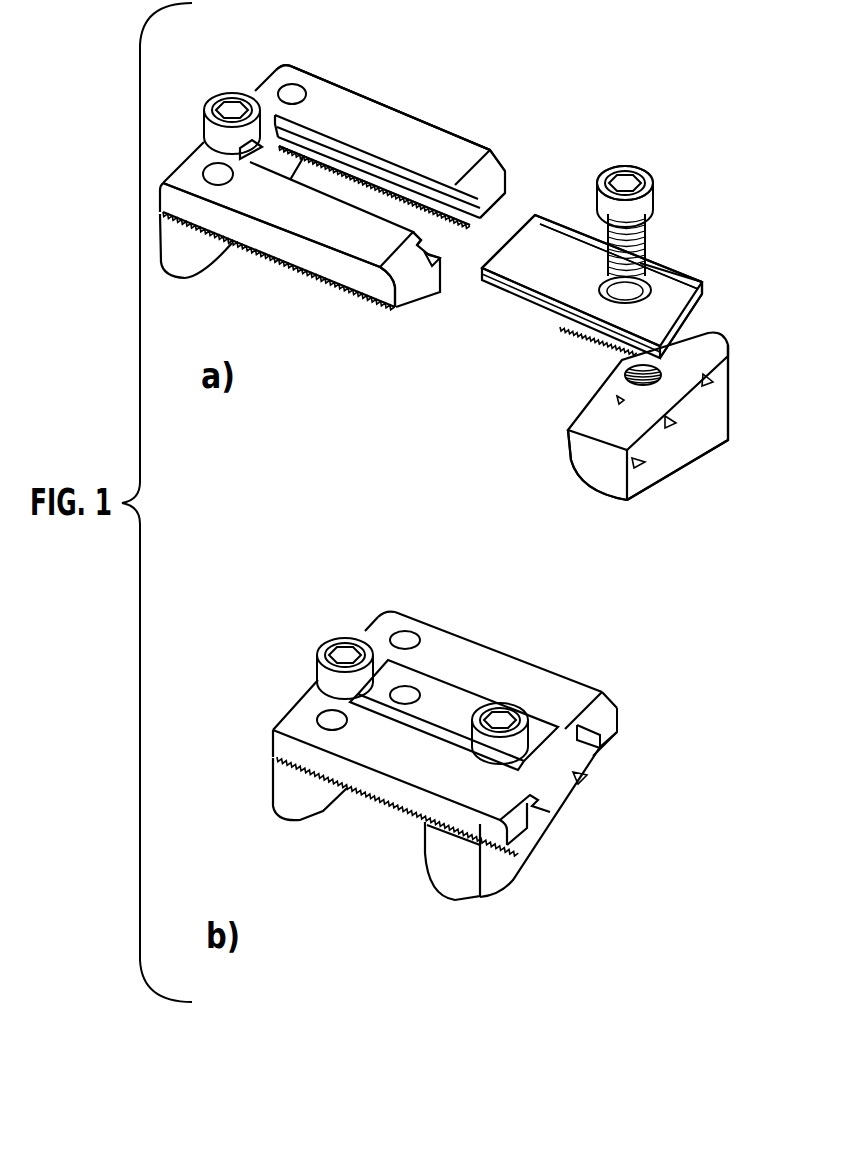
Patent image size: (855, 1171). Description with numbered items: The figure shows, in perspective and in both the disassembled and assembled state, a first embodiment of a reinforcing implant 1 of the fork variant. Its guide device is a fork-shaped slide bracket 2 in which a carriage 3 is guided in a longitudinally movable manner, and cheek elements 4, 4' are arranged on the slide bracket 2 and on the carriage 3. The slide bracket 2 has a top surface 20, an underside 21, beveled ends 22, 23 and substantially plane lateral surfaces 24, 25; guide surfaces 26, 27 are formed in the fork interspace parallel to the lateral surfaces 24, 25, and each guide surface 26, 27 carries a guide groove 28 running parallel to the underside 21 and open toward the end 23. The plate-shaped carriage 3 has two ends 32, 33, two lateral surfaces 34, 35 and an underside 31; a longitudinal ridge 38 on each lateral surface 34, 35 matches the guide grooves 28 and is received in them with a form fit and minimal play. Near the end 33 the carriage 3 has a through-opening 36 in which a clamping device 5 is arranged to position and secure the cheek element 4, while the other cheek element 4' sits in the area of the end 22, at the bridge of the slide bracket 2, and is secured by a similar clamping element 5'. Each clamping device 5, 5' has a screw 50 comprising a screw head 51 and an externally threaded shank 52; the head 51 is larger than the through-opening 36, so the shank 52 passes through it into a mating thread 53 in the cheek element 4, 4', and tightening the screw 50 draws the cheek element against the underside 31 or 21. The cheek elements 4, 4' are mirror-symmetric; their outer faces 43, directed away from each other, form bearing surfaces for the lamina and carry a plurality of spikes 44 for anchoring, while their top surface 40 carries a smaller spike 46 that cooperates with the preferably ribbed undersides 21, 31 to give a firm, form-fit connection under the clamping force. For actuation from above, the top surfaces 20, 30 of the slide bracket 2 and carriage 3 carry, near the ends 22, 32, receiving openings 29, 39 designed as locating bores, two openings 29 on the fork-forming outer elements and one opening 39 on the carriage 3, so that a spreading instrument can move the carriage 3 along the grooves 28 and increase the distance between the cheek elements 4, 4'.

The reinforcing implant 1 is at (590, 63).
The fork-shaped slide bracket 2 is at (393, 130).
The carriage 3 is at (540, 270).
The cheek element 4 is at (500, 635).
The cheek element 4' is at (253, 539).
The clamping device 5 is at (581, 437).
The clamping element 5' is at (267, 376).
The top surface 20 is at (449, 166).
The underside 21 is at (297, 272).
The beveled end 22 is at (268, 75).
The beveled end 23 is at (422, 288).
The lateral surface 24 is at (345, 90).
The lateral surface 25 is at (340, 270).
The guide surface 26 is at (337, 143).
The guide surface 27 is at (420, 236).
The guide groove 28 is at (500, 160).
The receiving opening 29 is at (292, 90).
The top surface 30 is at (586, 284).
The underside 31 is at (503, 300).
The end 32 is at (512, 228).
The end 33 is at (697, 313).
The lateral surface 34 is at (650, 263).
The lateral surface 35 is at (575, 328).
The through-opening 36 is at (640, 297).
The longitudinal ridge 38 is at (680, 275).
The receiving opening 39 is at (407, 686).
The top surface 40 is at (605, 418).
The outer face 43 is at (640, 478).
The spike 44 is at (712, 384).
The spike 46 is at (618, 402).
The screw 50 is at (625, 172).
The screw head 51 is at (645, 209).
The shank 52 is at (643, 234).
The mating thread 53 is at (652, 361).